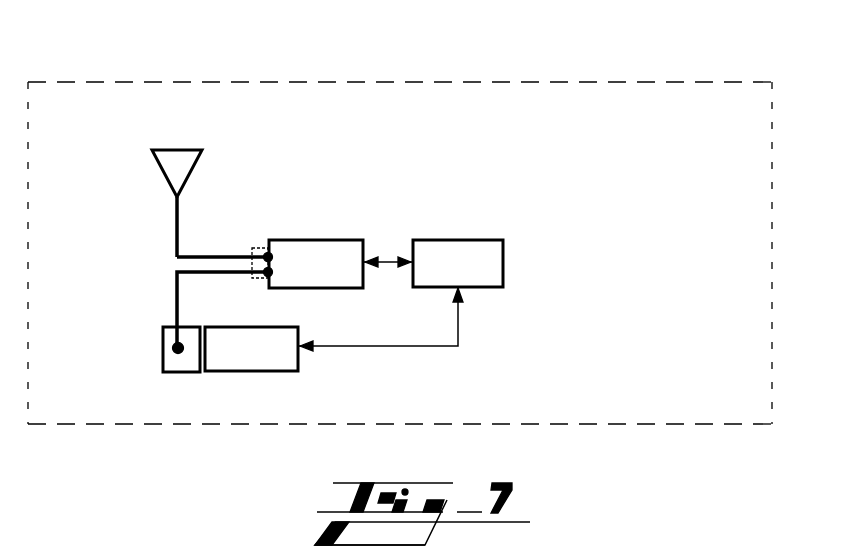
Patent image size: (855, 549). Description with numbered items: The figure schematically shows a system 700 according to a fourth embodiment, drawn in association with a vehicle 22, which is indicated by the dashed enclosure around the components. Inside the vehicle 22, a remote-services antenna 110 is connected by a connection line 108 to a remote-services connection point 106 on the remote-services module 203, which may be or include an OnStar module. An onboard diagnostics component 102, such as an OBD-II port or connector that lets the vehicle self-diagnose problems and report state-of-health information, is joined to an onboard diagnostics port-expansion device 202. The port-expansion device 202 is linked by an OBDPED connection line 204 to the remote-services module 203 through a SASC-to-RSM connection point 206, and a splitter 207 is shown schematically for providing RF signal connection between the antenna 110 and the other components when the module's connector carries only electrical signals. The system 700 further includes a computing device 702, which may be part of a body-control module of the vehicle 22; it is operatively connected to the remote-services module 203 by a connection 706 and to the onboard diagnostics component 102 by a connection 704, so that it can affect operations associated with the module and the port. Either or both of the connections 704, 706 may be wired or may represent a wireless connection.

The vehicle 22 is at (365, 82).
The remote-services antenna 110 is at (136, 214).
The connection line 108 is at (193, 257).
The remote-services connection point 106 is at (257, 249).
The OBDPED connection line 204 is at (177, 294).
The splitter 207 is at (256, 280).
The SASC-to-RSM connection point 206 is at (261, 276).
The remote-services module 203 is at (336, 239).
The computing device 702 is at (448, 240).
The connection 706 is at (386, 263).
The connection 704 is at (425, 347).
The onboard diagnostics port-expansion device 202 is at (163, 372).
The onboard diagnostics component 102 is at (230, 372).
The system 700 is at (610, 176).